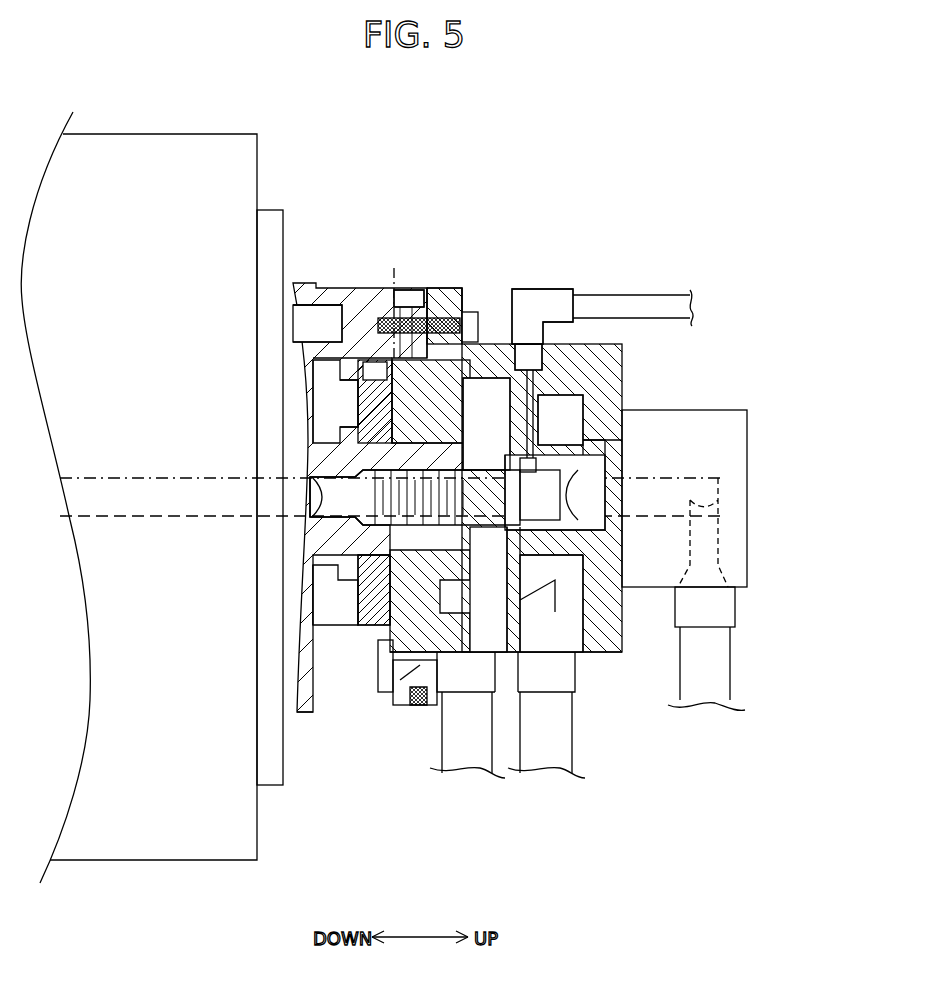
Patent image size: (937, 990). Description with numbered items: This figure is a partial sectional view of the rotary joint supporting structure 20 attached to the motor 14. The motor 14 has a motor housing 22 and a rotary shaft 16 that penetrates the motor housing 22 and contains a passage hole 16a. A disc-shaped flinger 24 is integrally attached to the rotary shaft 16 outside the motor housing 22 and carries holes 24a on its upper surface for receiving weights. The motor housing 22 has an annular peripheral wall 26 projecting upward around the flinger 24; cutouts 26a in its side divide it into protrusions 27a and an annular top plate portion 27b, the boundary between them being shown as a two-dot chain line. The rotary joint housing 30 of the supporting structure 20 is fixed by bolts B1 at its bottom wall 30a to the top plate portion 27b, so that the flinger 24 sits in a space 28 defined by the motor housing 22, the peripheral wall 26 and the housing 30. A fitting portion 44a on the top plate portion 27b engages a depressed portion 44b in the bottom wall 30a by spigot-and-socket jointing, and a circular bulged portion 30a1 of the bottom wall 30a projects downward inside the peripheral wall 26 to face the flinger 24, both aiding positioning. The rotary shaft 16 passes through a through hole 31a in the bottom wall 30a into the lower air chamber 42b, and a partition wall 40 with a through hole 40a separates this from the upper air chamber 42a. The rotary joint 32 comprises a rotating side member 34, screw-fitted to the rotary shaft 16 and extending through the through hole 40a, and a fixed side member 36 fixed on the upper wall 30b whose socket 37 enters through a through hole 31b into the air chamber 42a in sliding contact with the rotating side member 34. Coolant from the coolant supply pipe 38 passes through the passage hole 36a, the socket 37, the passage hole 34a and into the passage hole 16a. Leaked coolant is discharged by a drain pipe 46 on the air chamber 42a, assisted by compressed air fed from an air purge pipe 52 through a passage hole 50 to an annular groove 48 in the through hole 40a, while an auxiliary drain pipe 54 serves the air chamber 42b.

The motor 14 is at (158, 128).
The motor housing 22 is at (107, 150).
The rotary shaft 16 is at (335, 465).
The passage hole 16a is at (340, 497).
The rotary joint supporting structure 20 is at (605, 285).
The flinger 24 is at (350, 356).
The holes 24a is at (342, 320).
The peripheral wall 26 is at (352, 272).
The cutouts 26a is at (345, 690).
The protrusions 27a is at (340, 286).
The top plate portion 27b is at (400, 285).
The space 28 is at (335, 388).
The rotary joint housing 30 is at (492, 335).
The bottom wall 30a is at (444, 305).
The bulged portion 30a1 is at (313, 425).
The upper wall 30b is at (622, 598).
The through hole 31a is at (470, 465).
The through hole 31b is at (622, 455).
The rotary joint 32 is at (808, 773).
The rotating side member 34 is at (453, 530).
The passage hole 34a is at (305, 512).
The fixed side member 36 is at (748, 590).
The passage hole 36a is at (748, 490).
The socket 37 is at (605, 420).
The coolant supply pipe 38 is at (705, 684).
The partition wall 40 is at (545, 561).
The through hole 40a is at (548, 460).
The air chamber 42a is at (565, 585).
The air chamber 42b is at (358, 605).
The fitting portion 44a is at (440, 300).
The depressed portion 44b is at (398, 705).
The drain pipe 46 is at (550, 780).
The annular groove 48 is at (575, 525).
The passage hole 50 is at (528, 400).
The air purge pipe 52 is at (652, 295).
The auxiliary drain pipe 54 is at (460, 780).
The bolts B1 is at (478, 330).